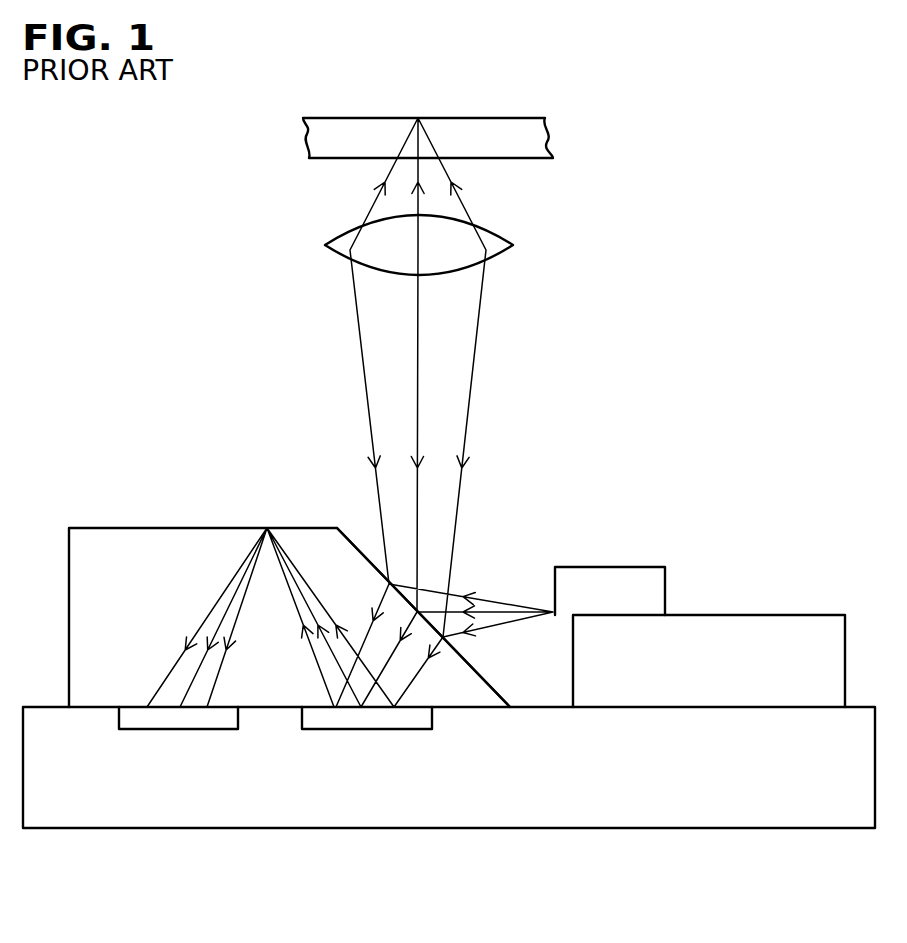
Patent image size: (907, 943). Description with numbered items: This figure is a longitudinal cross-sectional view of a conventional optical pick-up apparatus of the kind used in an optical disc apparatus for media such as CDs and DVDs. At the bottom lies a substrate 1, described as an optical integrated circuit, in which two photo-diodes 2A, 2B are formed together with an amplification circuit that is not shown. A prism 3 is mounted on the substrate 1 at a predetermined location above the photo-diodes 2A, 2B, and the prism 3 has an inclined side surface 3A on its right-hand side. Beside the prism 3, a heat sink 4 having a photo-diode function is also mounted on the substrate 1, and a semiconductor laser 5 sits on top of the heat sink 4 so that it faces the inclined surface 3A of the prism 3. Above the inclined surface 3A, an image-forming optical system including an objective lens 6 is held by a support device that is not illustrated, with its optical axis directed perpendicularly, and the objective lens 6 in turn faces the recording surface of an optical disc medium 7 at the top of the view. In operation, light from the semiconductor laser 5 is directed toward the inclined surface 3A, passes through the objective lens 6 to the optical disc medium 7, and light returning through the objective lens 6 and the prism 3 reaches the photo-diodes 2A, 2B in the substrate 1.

The substrate 1 is at (597, 787).
The photo-diode 2A is at (348, 717).
The photo-diode 2B is at (153, 719).
The prism 3 is at (309, 578).
The inclined side surface 3A is at (483, 678).
The heat sink 4 is at (767, 643).
The semiconductor laser 5 is at (597, 590).
The objective lens 6 is at (513, 245).
The optical disc medium 7 is at (528, 135).